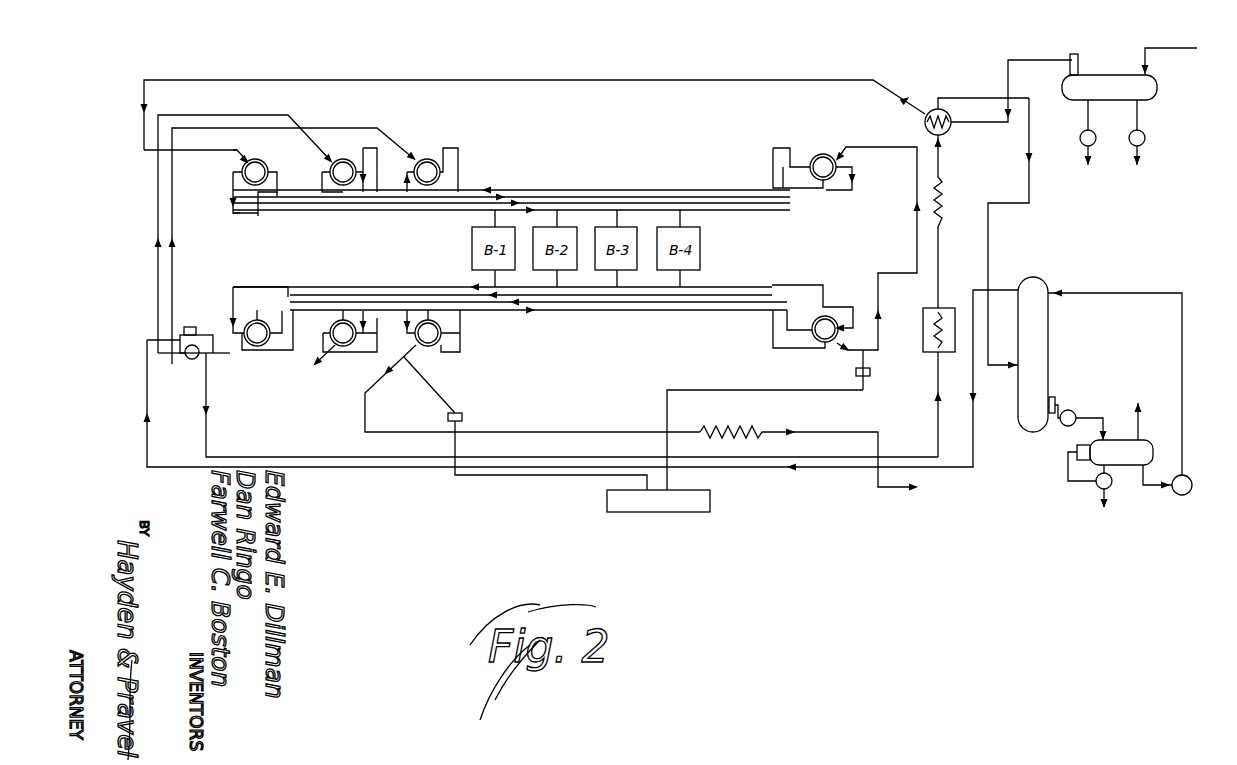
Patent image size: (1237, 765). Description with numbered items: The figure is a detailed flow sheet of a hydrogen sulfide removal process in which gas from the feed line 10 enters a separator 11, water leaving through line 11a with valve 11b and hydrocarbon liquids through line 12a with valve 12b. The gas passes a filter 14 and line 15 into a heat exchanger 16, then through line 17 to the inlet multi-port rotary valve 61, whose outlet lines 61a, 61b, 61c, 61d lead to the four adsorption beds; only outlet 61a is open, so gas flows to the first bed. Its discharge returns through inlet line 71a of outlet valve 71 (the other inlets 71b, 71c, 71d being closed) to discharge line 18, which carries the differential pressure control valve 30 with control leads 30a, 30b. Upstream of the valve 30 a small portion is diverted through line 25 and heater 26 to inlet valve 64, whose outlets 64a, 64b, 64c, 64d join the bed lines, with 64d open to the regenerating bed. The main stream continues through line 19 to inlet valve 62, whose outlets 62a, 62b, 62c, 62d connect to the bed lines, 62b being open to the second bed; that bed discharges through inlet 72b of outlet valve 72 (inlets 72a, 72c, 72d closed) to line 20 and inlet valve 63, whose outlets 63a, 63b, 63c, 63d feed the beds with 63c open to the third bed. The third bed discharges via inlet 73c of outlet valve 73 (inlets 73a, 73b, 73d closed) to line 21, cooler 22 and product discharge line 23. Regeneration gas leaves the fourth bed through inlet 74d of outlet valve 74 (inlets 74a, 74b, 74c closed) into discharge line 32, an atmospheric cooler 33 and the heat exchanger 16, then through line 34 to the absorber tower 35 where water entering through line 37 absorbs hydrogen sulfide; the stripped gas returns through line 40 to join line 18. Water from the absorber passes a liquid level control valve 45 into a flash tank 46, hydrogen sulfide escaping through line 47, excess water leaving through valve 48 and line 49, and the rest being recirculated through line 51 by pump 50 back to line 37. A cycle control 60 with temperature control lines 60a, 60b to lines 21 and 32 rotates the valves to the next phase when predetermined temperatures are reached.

The feed line 10 is at (1172, 48).
The separator 11 is at (1106, 75).
The line 11a is at (1140, 116).
The valve 11b is at (1148, 138).
The line 12a is at (1088, 116).
The valve 12b is at (1080, 138).
The filter 14 is at (1075, 54).
The line 15 is at (1008, 60).
The heat exchanger 16 is at (946, 108).
The line 17 is at (758, 76).
The line 18 is at (224, 364).
The line 19 is at (260, 113).
The line 20 is at (412, 150).
The line 21 is at (502, 430).
The atmospheric cooler 22 is at (742, 420).
The product discharge line 23 is at (896, 490).
The line 25 is at (888, 142).
The heater 26 is at (925, 335).
The differential pressure control valve 30 is at (186, 364).
The control lead 30a is at (192, 327).
The control lead 30b is at (158, 330).
The discharge line 32 is at (880, 298).
The atmospheric cooler 33 is at (940, 190).
The line 34 is at (990, 234).
The absorber tower 35 is at (1048, 327).
The line 37 is at (1092, 293).
The line 40 is at (146, 402).
The liquid level control valve 45 is at (1074, 410).
The flash tank 46 is at (1135, 465).
The line 47 is at (1142, 418).
The liquid level control valve 48 is at (1090, 486).
The line 49 is at (1098, 500).
The pump 50 is at (1188, 494).
The line 51 is at (1152, 488).
The cycle control 60 is at (607, 500).
The temperature control line 60a is at (445, 388).
The temperature control line 60b is at (785, 388).
The multi-port rotary valve 61 is at (254, 186).
The outlet line 61a is at (238, 216).
The outlet line 61b is at (262, 215).
The outlet line 61c is at (286, 200).
The outlet line 61d is at (248, 152).
The multi-port rotary valve 62 is at (349, 170).
The outlet line 62a is at (337, 212).
The outlet line 62b is at (372, 150).
The outlet line 62c is at (372, 158).
The outlet line 62d is at (326, 160).
The multi-port rotary valve 63 is at (431, 170).
The outlet line 63a is at (455, 210).
The outlet line 63b is at (420, 212).
The outlet line 63c is at (410, 196).
The outlet line 63d is at (458, 156).
The multi-port rotary valve 64 is at (814, 169).
The outlet line 64a is at (773, 148).
The outlet line 64b is at (797, 165).
The outlet line 64c is at (805, 192).
The outlet line 64d is at (855, 176).
The multi-port rotary valve 71 is at (262, 318).
The inlet line 71a is at (252, 287).
The inlet line 71b is at (325, 296).
The inlet line 71c is at (284, 310).
The inlet line 71d is at (265, 305).
The multi-port rotary valve 72 is at (350, 331).
The inlet line 72a is at (345, 346).
The inlet line 72b is at (350, 348).
The inlet line 72c is at (364, 310).
The inlet line 72d is at (320, 350).
The multi-port rotary valve 73 is at (432, 331).
The inlet line 73a is at (462, 333).
The inlet line 73b is at (436, 308).
The inlet line 73c is at (410, 308).
The inlet line 73d is at (462, 351).
The multi-port rotary valve 74 is at (812, 316).
The inlet line 74a is at (823, 285).
The inlet line 74b is at (773, 333).
The inlet line 74c is at (775, 348).
The inlet line 74d is at (840, 307).